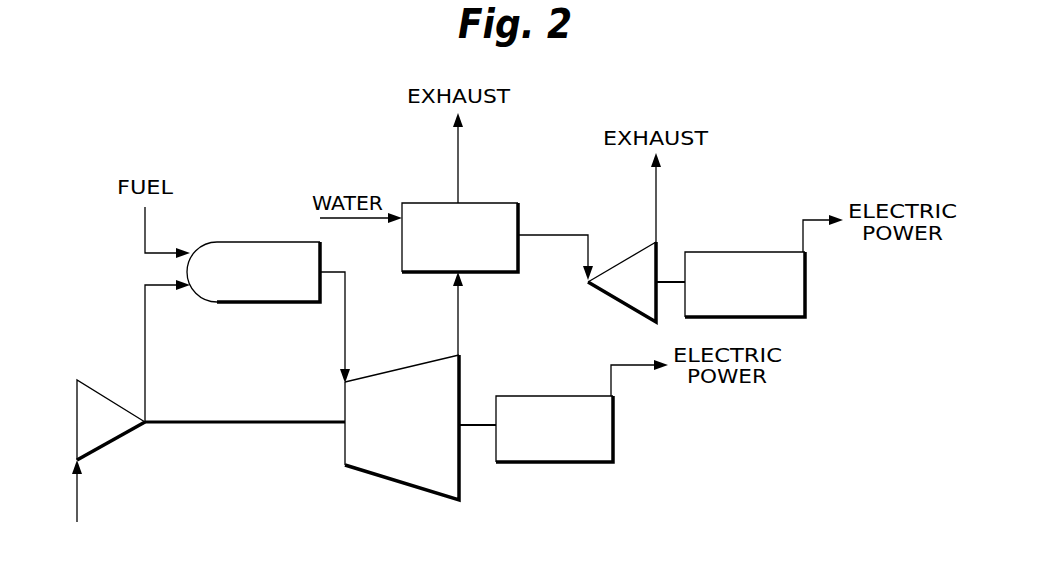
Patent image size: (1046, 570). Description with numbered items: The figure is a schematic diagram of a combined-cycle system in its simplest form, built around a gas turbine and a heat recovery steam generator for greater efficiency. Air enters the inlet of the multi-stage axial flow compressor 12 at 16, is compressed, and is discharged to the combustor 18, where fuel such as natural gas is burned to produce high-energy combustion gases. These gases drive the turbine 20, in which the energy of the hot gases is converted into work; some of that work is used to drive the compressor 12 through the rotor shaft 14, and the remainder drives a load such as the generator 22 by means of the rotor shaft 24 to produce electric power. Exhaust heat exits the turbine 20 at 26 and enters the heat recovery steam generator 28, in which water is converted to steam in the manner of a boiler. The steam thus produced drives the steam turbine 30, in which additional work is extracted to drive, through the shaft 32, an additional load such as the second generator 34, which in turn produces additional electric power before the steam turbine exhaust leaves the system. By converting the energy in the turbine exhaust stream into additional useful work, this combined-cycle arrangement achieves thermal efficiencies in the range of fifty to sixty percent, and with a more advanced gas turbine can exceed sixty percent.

The multi-stage axial flow compressor 12 is at (110, 432).
The rotor shaft 14 is at (193, 422).
The compressor inlet 16 is at (89, 493).
The combustor 18 is at (266, 281).
The turbine 20 is at (415, 430).
The generator 22 is at (565, 437).
The rotor shaft 24 is at (472, 427).
The turbine exhaust 26 is at (458, 333).
The heat recovery steam generator 28 is at (471, 244).
The steam turbine 30 is at (645, 290).
The shaft 32 is at (670, 273).
The second generator 34 is at (756, 292).